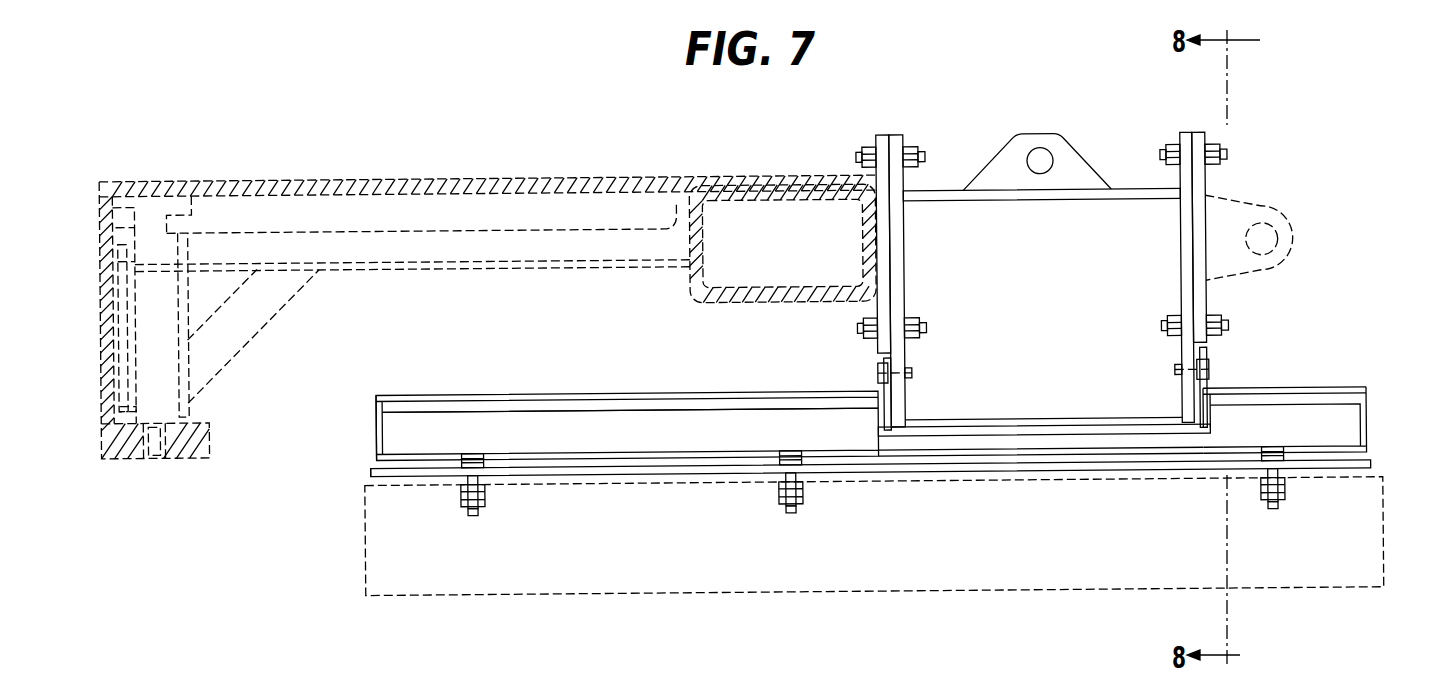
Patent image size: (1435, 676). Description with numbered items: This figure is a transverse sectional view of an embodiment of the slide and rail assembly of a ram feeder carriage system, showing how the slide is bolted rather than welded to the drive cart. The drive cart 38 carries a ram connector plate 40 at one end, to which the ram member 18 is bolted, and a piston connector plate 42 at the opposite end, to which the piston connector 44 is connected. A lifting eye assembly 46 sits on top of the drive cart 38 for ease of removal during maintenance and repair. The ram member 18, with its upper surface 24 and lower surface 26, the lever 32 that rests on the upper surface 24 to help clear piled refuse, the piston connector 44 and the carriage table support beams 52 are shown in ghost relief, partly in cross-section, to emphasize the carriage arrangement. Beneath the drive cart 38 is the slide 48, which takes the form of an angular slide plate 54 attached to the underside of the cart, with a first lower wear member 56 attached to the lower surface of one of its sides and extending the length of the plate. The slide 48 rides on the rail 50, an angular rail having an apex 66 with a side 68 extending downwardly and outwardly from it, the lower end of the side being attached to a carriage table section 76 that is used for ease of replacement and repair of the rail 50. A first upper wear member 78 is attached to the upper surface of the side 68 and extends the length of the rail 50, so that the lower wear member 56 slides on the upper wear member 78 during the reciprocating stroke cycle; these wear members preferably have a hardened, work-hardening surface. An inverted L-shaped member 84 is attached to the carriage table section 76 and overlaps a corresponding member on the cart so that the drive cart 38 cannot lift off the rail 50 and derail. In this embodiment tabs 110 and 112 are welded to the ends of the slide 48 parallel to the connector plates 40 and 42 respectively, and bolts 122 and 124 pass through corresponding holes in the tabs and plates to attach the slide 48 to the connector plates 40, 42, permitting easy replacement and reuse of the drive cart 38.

The ram member 18 is at (469, 304).
The upper surface 24 is at (562, 175).
The lower surface 26 is at (177, 455).
The lever 32 is at (101, 330).
The drive cart 38 is at (946, 211).
The ram connector plate 40 is at (892, 133).
The piston connector plate 42 is at (1182, 134).
The piston connector 44 is at (1292, 225).
The lifting eye assembly 46 is at (1062, 140).
The slide 48 is at (1222, 379).
The rail 50 is at (1376, 428).
The carriage table support beams 52 is at (1397, 504).
The angular slide plate 54 is at (948, 428).
The first lower wear member 56 is at (878, 442).
The apex 66 is at (374, 404).
The side 68 is at (370, 465).
The carriage table section 76 is at (1374, 468).
The first upper wear member 78 is at (570, 429).
The inverted L-shaped member 84 is at (1369, 392).
The tab 110 is at (884, 361).
The tab 112 is at (1208, 383).
The bolt 122 is at (880, 378).
The bolt 124 is at (1208, 376).